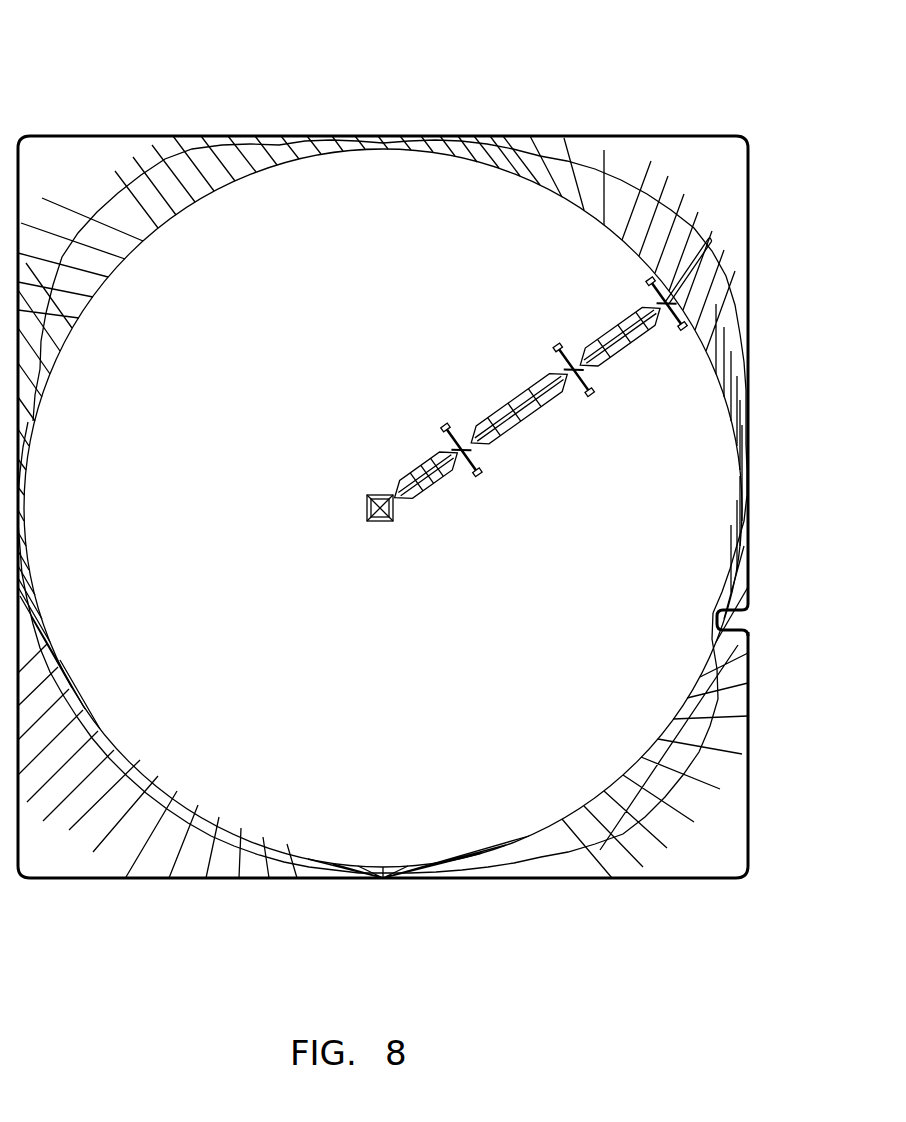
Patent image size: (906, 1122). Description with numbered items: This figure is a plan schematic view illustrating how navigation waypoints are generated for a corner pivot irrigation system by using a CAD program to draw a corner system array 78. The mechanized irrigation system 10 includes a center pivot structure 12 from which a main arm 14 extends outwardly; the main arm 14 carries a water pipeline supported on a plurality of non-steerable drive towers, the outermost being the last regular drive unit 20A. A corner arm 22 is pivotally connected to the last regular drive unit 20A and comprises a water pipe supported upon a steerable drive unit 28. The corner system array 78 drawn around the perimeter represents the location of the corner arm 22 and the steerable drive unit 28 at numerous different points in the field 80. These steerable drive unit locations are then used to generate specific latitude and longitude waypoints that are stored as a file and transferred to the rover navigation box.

The mechanized irrigation system 10 is at (541, 346).
The center pivot structure 12 is at (379, 538).
The main arm 14 is at (484, 413).
The last regular drive unit 20A is at (667, 338).
The corner arm 22 is at (680, 250).
The steerable drive unit 28 is at (704, 249).
The corner system array 78 is at (568, 143).
The field 80 is at (710, 134).